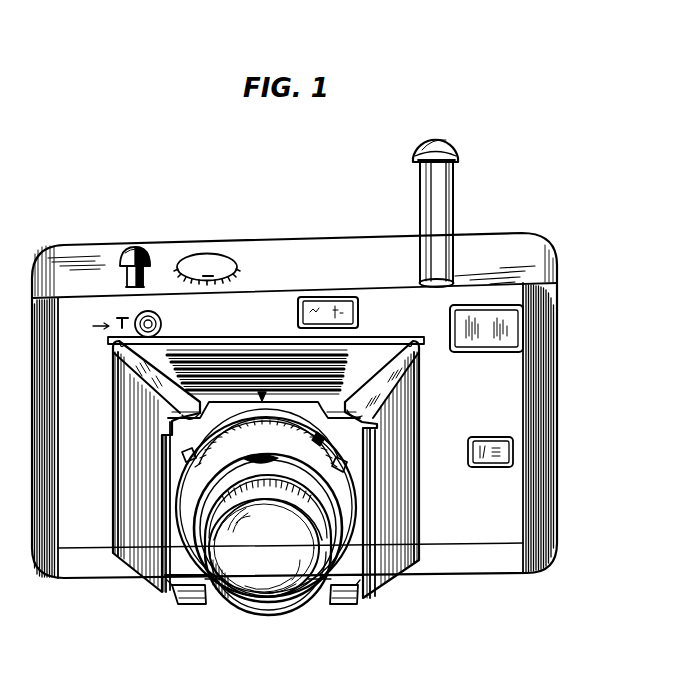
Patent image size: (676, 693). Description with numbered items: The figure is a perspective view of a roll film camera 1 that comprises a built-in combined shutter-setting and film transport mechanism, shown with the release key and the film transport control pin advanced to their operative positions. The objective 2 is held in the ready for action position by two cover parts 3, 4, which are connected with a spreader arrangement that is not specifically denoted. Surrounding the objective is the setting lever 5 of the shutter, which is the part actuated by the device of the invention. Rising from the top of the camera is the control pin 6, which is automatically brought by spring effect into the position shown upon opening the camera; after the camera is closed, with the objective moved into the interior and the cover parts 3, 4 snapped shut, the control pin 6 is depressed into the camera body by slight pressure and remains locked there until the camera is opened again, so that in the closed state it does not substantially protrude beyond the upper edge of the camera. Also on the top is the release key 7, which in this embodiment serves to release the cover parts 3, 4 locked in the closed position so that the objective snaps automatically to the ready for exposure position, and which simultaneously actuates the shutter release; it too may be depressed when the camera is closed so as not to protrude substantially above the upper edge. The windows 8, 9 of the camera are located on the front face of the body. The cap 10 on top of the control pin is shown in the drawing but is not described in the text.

The roll film camera 1 is at (518, 483).
The objective 2 is at (258, 575).
The cover part 3 is at (142, 565).
The cover part 4 is at (388, 565).
The setting lever of the shutter 5 is at (352, 478).
The control pin 6 is at (446, 190).
The release key 7 is at (126, 279).
The window 8 is at (325, 307).
The window 9 is at (512, 329).
The cap 10 is at (432, 143).